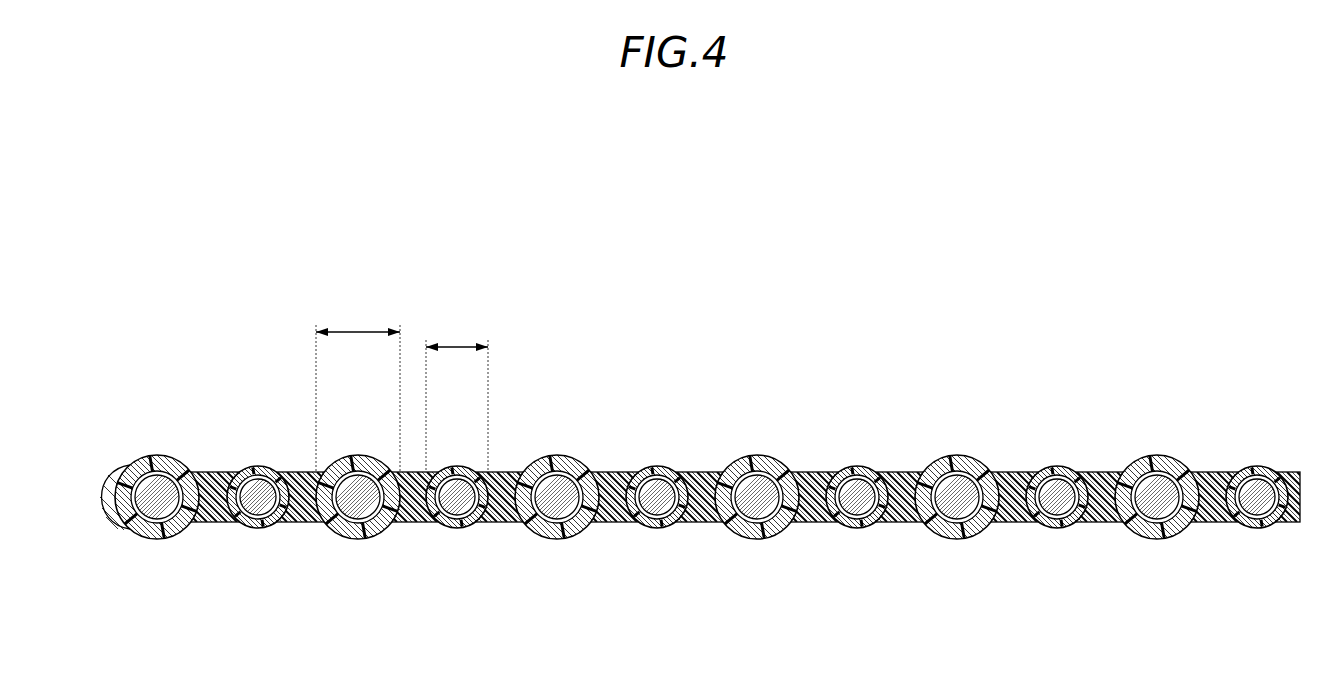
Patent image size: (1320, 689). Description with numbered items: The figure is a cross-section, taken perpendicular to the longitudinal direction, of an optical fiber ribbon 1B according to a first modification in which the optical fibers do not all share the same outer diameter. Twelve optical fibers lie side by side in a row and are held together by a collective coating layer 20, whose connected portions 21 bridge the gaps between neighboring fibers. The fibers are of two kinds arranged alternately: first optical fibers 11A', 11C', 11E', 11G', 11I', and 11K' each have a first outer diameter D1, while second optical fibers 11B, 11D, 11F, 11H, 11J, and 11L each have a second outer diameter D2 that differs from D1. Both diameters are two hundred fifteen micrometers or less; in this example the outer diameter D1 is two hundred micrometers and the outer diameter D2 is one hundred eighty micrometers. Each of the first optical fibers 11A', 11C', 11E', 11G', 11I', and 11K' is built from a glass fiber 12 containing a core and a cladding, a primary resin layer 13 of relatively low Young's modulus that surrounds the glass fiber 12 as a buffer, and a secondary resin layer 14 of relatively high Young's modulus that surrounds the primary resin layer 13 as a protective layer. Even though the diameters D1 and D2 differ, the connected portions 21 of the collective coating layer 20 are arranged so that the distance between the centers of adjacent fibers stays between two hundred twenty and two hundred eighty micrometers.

The optical fiber ribbon 1B is at (689, 416).
The first optical fiber 11A' is at (157, 449).
The second optical fiber 11B is at (272, 467).
The first optical fiber 11C' is at (358, 486).
The second optical fiber 11D is at (457, 467).
The first optical fiber 11E' is at (557, 449).
The second optical fiber 11F is at (665, 467).
The first optical fiber 11G' is at (757, 449).
The second optical fiber 11H is at (865, 467).
The first optical fiber 11I' is at (957, 449).
The second optical fiber 11J is at (1064, 467).
The first optical fiber 11K' is at (1157, 449).
The second optical fiber 11L is at (1263, 467).
The glass fiber 12 is at (350, 527).
The primary resin layer 13 is at (358, 539).
The secondary resin layer 14 is at (358, 534).
The collective coating layer 20 is at (148, 541).
The connected portion 21 is at (205, 523).
The outer diameter D1 is at (358, 390).
The outer diameter D2 is at (457, 398).